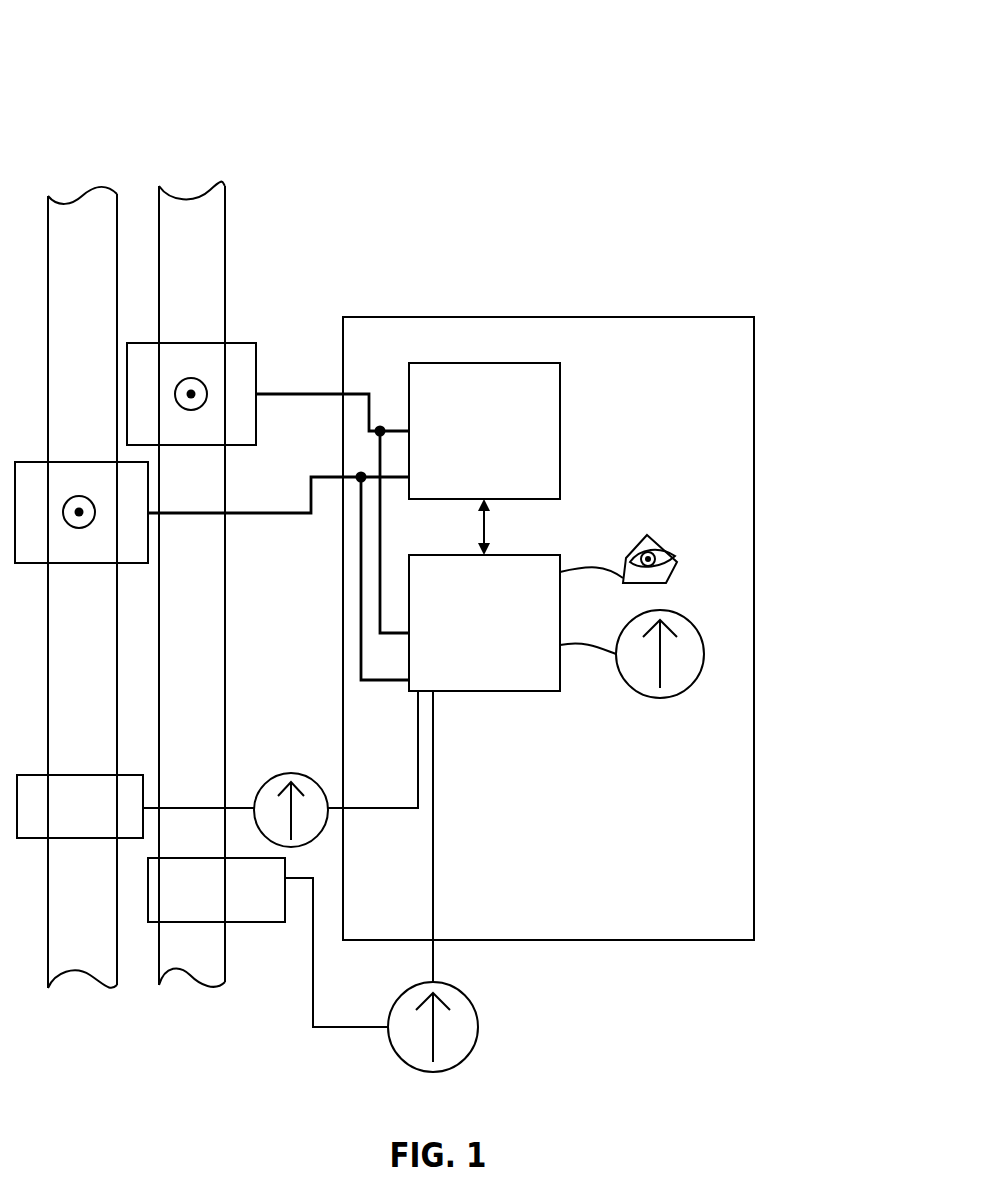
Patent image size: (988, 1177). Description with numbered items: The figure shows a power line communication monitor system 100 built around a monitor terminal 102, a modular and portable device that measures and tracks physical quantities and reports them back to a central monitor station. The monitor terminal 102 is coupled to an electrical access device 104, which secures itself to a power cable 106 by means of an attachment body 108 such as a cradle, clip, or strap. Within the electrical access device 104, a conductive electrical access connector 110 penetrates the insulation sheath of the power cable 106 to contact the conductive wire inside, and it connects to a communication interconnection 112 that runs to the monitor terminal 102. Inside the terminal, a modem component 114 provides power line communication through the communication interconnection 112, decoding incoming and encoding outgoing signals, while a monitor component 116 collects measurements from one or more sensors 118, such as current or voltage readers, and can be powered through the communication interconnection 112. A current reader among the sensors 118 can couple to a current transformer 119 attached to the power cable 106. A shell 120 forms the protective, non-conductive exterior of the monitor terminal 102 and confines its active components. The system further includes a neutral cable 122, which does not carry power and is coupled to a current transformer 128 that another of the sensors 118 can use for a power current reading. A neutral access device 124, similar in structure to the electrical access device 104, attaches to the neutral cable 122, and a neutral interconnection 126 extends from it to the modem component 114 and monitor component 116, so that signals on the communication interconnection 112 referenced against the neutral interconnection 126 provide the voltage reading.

The power line communication monitor system 100 is at (74, 52).
The monitor terminal 102 is at (548, 607).
The electrical access device 104 is at (182, 342).
The power cable 106 is at (204, 247).
The attachment body 108 is at (239, 358).
The electrical access connector 110 is at (195, 397).
The communication interconnection 112 is at (272, 393).
The modem component 114 is at (484, 431).
The monitor component 116 is at (484, 623).
The sensors 118 is at (290, 773).
The current transformer 119 is at (245, 922).
The shell 120 is at (460, 317).
The neutral cable 122 is at (95, 648).
The neutral access device 124 is at (145, 563).
The neutral interconnection 126 is at (207, 513).
The current transformer 128 is at (100, 840).